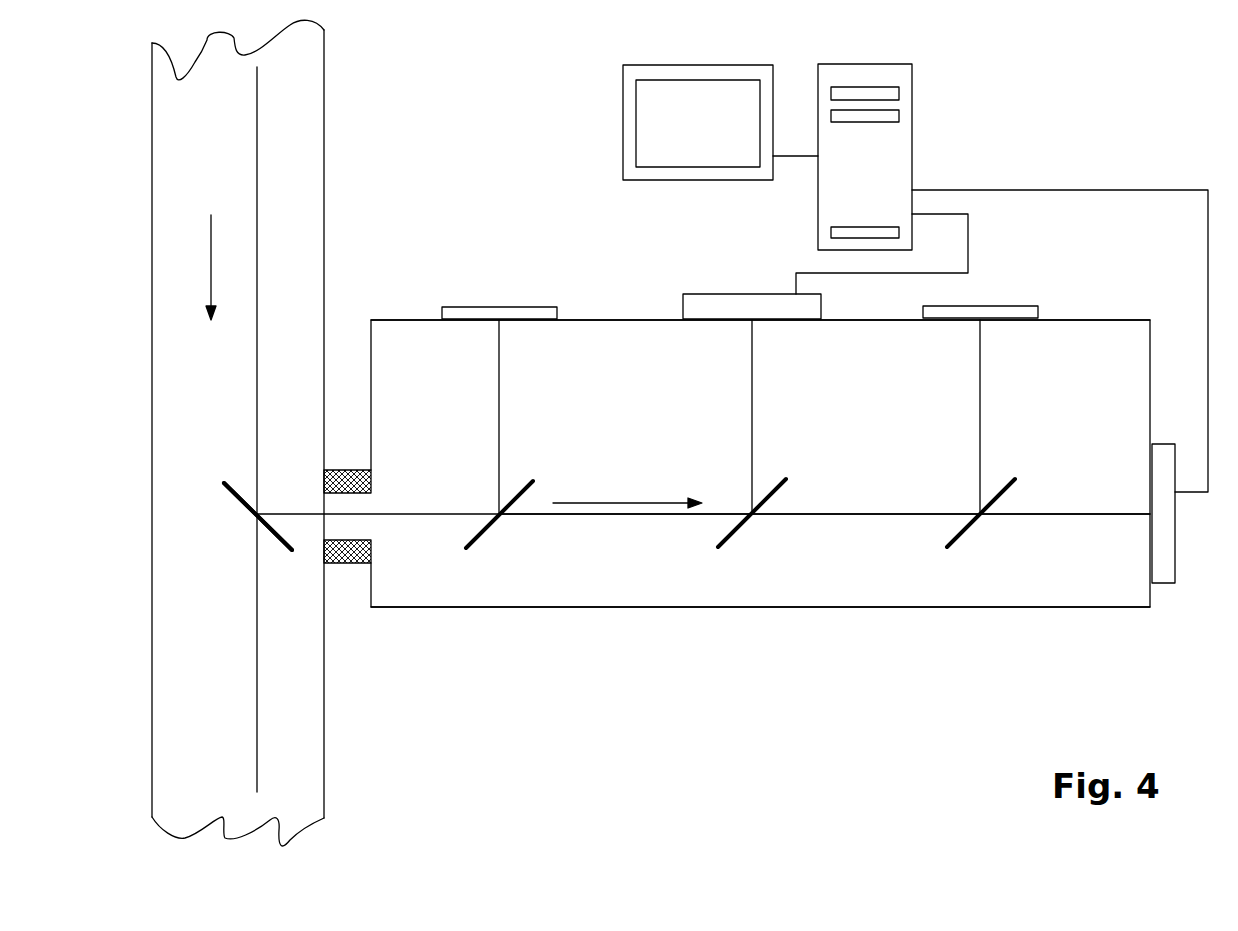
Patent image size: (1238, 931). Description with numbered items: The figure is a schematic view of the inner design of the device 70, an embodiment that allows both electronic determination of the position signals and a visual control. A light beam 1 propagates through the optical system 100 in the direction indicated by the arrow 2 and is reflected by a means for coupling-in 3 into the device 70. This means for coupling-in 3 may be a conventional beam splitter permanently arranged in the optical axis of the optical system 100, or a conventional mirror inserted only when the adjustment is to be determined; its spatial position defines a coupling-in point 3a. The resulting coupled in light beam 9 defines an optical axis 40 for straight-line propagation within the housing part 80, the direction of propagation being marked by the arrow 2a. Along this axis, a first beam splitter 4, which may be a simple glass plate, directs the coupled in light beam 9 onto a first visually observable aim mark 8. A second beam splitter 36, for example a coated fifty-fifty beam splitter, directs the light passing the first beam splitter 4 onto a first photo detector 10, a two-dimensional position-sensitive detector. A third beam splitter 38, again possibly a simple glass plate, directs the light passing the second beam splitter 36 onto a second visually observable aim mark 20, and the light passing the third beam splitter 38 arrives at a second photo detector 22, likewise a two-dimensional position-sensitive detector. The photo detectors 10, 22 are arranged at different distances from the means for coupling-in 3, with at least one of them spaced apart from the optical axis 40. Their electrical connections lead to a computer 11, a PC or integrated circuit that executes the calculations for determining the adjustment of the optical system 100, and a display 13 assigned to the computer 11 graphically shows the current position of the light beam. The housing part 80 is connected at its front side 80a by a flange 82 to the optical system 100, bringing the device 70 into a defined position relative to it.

The optical system 100 is at (302, 152).
The light beam 1 is at (257, 182).
The arrow 2 is at (211, 262).
The means for coupling-in 3 is at (242, 507).
The coupling-in point 3a is at (258, 514).
The housing part 80 is at (732, 607).
The front side 80a is at (369, 340).
The flange 82 is at (352, 552).
The coupled in light beam 9 is at (427, 513).
The optical axis 40 is at (832, 514).
The arrow 2a is at (600, 503).
The first beam splitter 4 is at (483, 537).
The second beam splitter 36 is at (733, 537).
The third beam splitter 38 is at (962, 537).
The first visually observable aim mark 8 is at (534, 307).
The first photo detector 10 is at (728, 308).
The second visually observable aim mark 20 is at (1016, 306).
The second photo detector 22 is at (1166, 557).
The computer 11 is at (880, 148).
The display 13 is at (647, 120).
The device 70 is at (1030, 625).